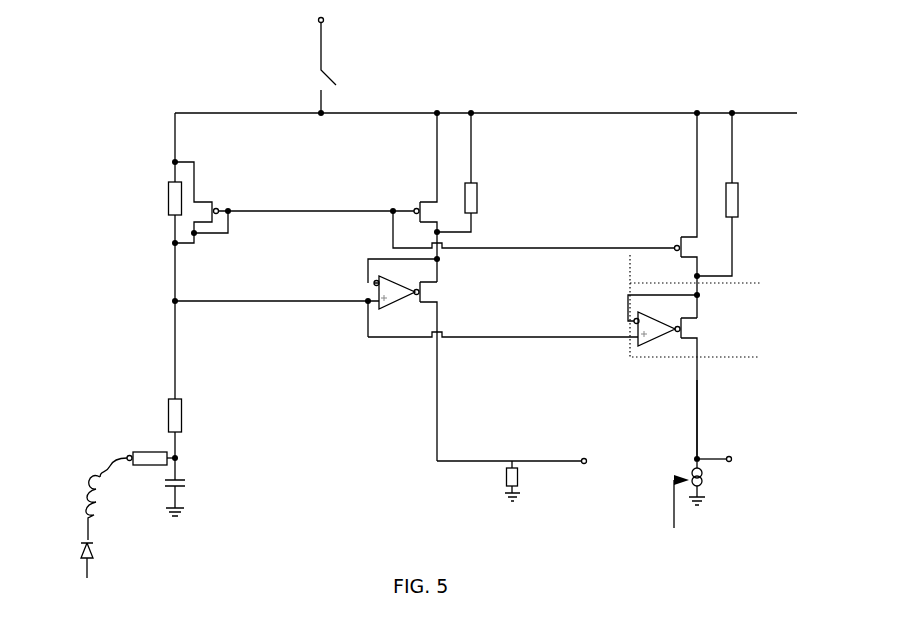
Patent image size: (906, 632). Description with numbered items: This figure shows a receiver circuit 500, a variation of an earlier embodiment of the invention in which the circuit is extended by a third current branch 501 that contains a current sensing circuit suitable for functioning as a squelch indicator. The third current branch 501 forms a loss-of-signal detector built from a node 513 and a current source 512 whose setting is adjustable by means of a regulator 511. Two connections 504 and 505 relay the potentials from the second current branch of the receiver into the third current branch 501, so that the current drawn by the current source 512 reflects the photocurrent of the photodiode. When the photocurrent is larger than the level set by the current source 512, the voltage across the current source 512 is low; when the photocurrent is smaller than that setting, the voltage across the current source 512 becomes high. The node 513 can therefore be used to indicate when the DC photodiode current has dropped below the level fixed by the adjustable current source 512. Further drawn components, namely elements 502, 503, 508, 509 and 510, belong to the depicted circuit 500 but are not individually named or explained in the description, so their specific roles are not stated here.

The receiver circuit 500 is at (168, 145).
The third current branch 501 is at (692, 422).
The resistor 502 is at (740, 205).
The inverter 503 is at (633, 322).
The connection 504 is at (535, 339).
The connection 505 is at (545, 250).
The pull-up transistor block 508 is at (752, 287).
The pull-down transistor block 509 is at (752, 358).
The transistor 510 is at (676, 240).
The regulator 511 is at (673, 510).
The current source 512 is at (703, 481).
The node 513 is at (732, 455).